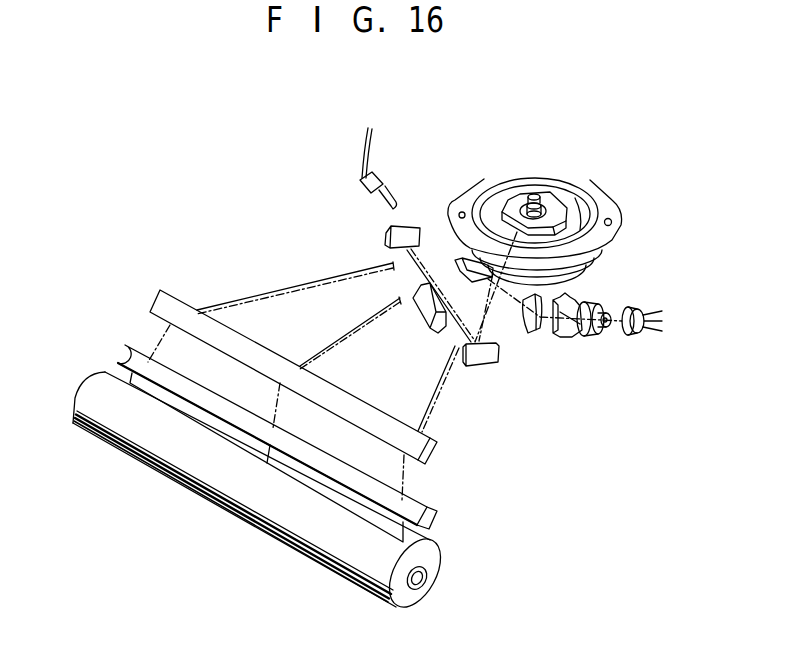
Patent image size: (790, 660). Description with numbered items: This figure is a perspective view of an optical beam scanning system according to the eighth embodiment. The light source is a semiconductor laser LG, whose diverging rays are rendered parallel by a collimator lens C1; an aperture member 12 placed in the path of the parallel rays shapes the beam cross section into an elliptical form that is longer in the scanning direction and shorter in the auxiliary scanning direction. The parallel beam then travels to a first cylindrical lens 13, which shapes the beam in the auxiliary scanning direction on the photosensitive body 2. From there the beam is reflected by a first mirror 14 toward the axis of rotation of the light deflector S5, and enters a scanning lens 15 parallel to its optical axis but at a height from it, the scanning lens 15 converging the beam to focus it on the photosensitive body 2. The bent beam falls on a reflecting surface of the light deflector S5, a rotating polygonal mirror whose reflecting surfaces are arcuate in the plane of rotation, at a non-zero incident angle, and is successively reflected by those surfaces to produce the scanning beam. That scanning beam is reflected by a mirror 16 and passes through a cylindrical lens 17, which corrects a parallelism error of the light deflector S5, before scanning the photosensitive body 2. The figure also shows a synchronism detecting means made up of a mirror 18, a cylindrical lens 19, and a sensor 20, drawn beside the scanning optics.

The photosensitive body 2 is at (338, 572).
The mirror 16 is at (428, 442).
The cylindrical lens 17 is at (432, 512).
The light deflector S5 is at (588, 164).
The sensor 20 is at (385, 188).
The cylindrical lens 19 is at (412, 227).
The scanning lens 15 is at (460, 263).
The first mirror 14 is at (423, 318).
The mirror 18 is at (482, 364).
The first cylindrical lens 13 is at (535, 328).
The aperture member 12 is at (567, 337).
The collimator lens C1 is at (593, 335).
The semiconductor laser LG is at (633, 334).